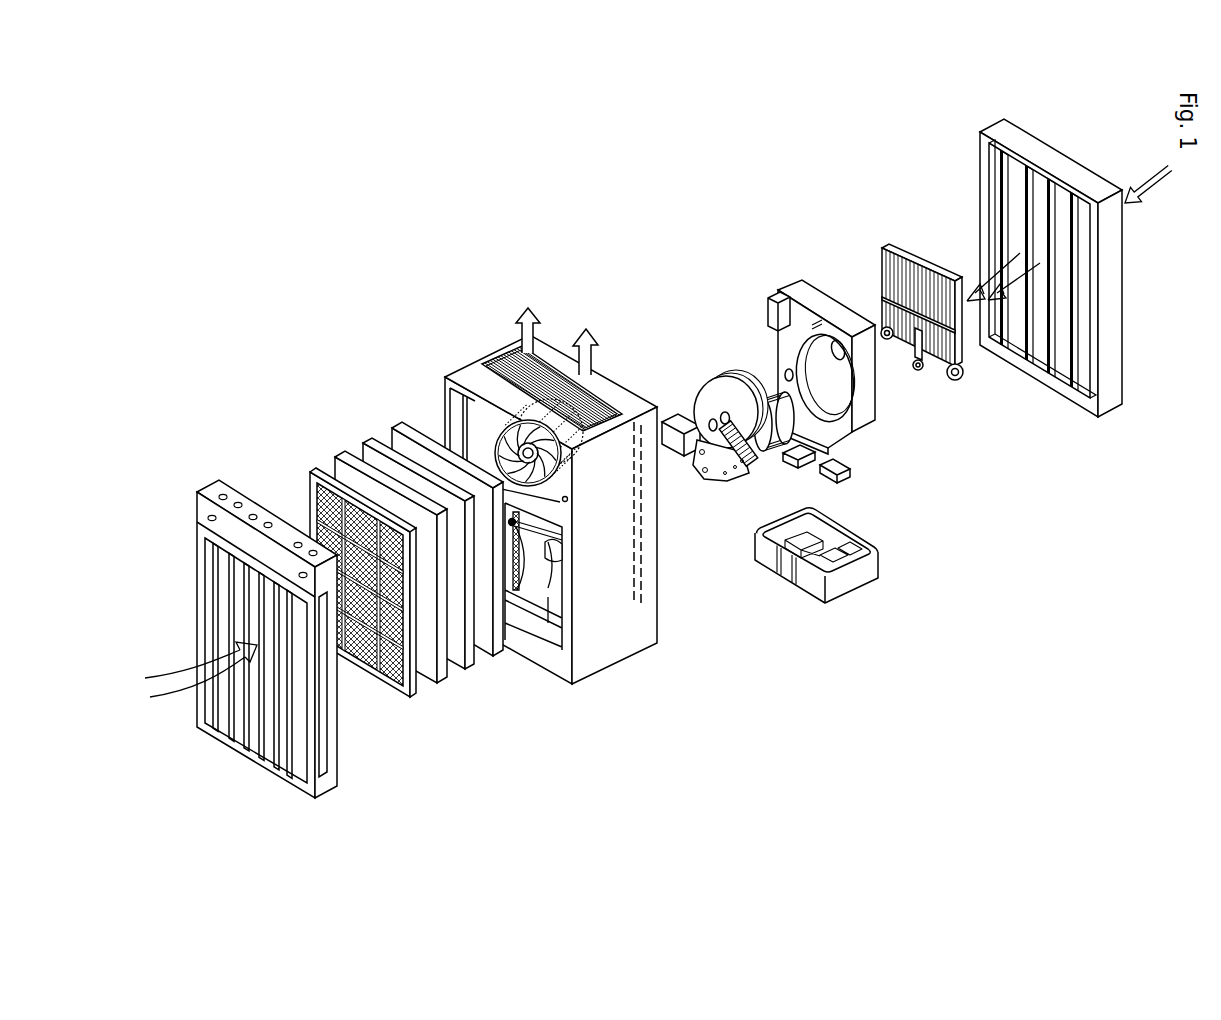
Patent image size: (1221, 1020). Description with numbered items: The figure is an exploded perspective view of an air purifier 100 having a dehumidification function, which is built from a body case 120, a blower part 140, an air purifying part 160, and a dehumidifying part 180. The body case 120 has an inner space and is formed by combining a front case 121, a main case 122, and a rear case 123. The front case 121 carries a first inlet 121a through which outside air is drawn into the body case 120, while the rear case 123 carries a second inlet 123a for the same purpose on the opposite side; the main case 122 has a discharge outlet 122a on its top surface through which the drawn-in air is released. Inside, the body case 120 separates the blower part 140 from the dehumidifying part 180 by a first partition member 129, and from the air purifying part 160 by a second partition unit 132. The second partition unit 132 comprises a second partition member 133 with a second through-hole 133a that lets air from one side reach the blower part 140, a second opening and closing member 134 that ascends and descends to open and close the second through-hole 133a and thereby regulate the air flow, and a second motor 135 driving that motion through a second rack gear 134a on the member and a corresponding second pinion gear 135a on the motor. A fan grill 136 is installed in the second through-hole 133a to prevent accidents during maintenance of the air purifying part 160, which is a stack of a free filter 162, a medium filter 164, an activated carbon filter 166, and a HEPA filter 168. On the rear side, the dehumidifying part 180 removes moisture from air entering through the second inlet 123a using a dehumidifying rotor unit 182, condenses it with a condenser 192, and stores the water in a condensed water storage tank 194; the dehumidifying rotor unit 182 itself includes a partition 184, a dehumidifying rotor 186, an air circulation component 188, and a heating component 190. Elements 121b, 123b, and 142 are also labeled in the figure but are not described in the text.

The air purifier 100 is at (262, 134).
The body case 120 is at (736, 401).
The front case 121 is at (234, 512).
The first inlet 121a is at (213, 557).
The grille frame 121b is at (225, 605).
The main case 122 is at (566, 446).
The discharge outlet 122a is at (550, 378).
The rear case 123 is at (818, 279).
The second inlet 123a is at (988, 318).
The slat 123b is at (1023, 350).
The first partition member 129 is at (623, 563).
The second partition unit 132 is at (601, 624).
The second partition member 133 is at (568, 498).
The second through-hole 133a is at (560, 500).
The second opening and closing member 134 is at (557, 513).
The second rack gear 134a is at (548, 623).
The second motor 135 is at (578, 492).
The second pinion gear 135a is at (513, 610).
The fan grill 136 is at (560, 490).
The blower part 140 is at (580, 440).
The fan casing 142 is at (580, 452).
The air purifying part 160 is at (376, 525).
The free filter 162 is at (335, 560).
The medium filter 164 is at (337, 454).
The activated carbon filter 166 is at (366, 440).
The high efficiency particulate air (HEPA) filter 168 is at (412, 425).
The dehumidifying part 180 is at (846, 414).
The dehumidifying rotor unit 182 is at (868, 466).
The partition 184 is at (837, 310).
The dehumidifying rotor 186 is at (736, 376).
The air circulation component 188 is at (680, 412).
The heating component 190 is at (745, 473).
The condenser 192 is at (928, 380).
The condensed water storage tank 194 is at (865, 555).